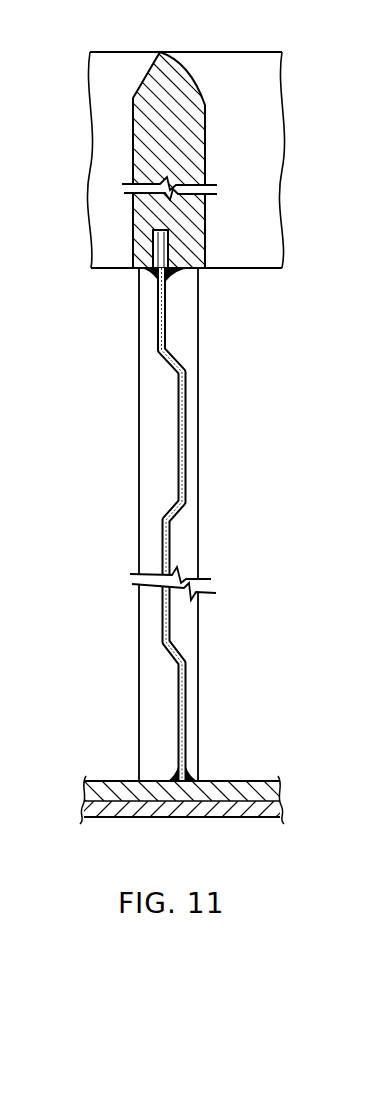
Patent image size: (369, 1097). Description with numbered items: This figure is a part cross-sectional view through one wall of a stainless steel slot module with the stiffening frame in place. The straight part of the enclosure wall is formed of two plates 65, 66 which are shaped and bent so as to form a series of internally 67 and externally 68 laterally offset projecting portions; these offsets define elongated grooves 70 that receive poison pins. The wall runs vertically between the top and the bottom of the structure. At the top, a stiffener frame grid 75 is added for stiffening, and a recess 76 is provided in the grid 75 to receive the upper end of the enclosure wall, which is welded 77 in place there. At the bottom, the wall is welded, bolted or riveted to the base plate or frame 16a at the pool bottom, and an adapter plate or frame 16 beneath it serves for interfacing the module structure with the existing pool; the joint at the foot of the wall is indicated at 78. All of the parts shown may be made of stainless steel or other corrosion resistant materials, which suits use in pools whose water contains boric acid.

The stiffener frame grid 75 is at (189, 96).
The recess 76 is at (170, 249).
The weld 77 is at (177, 272).
The elongated groove 70 is at (163, 524).
The externally offset projecting portion 68 is at (139, 478).
The internally offset projecting portion 67 is at (198, 486).
The plate 65 is at (168, 551).
The plate 66 is at (162, 612).
The solder connection 78 is at (190, 776).
The base plate or frame 16a is at (90, 790).
The adapter plate or frame 16 is at (200, 817).